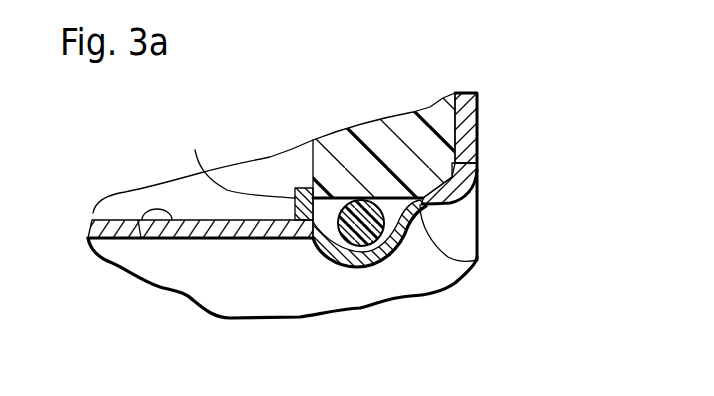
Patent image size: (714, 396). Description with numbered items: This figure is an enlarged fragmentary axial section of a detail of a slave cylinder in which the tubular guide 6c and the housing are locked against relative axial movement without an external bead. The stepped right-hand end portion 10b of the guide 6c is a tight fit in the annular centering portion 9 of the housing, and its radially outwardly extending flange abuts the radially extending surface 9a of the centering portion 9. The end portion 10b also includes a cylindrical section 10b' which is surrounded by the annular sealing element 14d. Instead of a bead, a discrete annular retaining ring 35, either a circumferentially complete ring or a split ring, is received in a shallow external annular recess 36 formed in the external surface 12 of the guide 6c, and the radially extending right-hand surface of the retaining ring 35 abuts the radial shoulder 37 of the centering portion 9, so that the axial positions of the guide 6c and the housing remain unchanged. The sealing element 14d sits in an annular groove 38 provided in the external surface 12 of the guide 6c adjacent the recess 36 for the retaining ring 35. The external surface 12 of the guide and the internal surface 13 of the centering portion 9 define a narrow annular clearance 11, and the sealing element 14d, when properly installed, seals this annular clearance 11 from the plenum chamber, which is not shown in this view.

The tubular guide 6c is at (138, 220).
The retaining ring 35 is at (236, 160).
The radial shoulder 37 is at (313, 162).
The centering portion 9 is at (368, 130).
The end portion 10b is at (508, 172).
The radial surface 9a is at (478, 165).
The cylindrical section 10b' is at (492, 212).
The internal surface 13 is at (332, 278).
The annular clearance 11 is at (477, 263).
The external surface 12 is at (137, 240).
The annular recess 36 is at (313, 224).
The annular sealing element 14d is at (342, 242).
The annular groove 38 is at (380, 246).